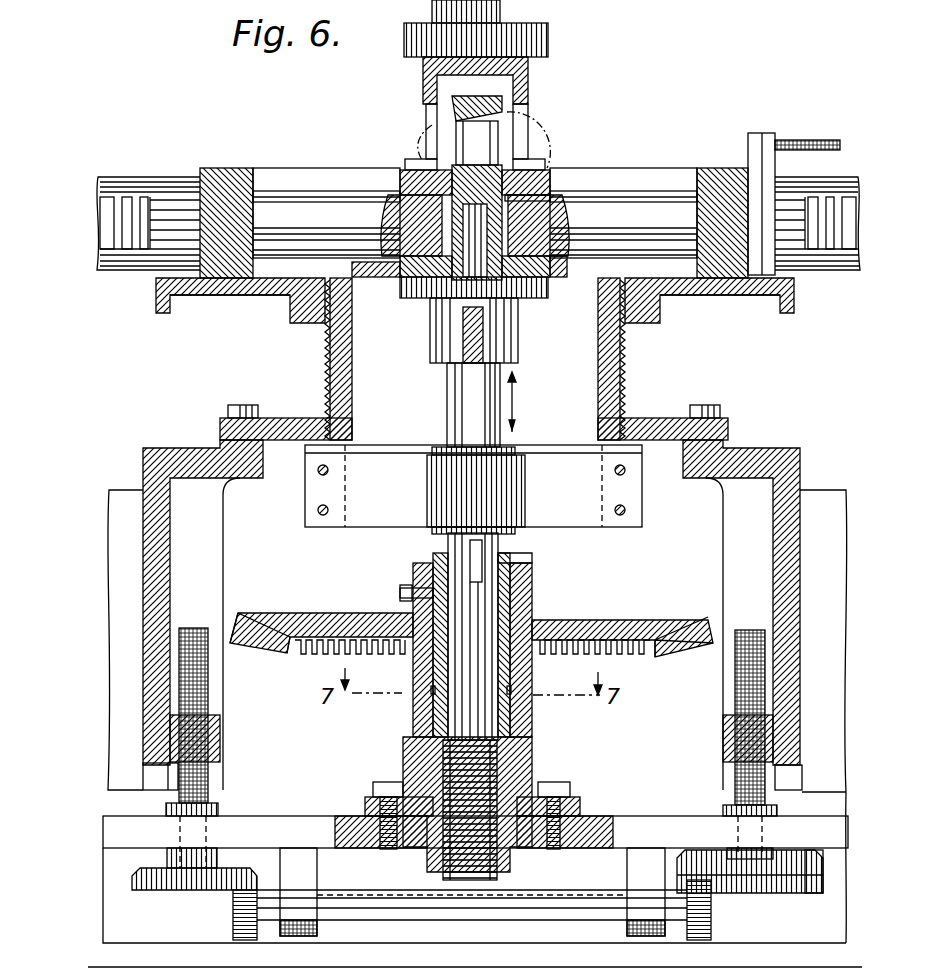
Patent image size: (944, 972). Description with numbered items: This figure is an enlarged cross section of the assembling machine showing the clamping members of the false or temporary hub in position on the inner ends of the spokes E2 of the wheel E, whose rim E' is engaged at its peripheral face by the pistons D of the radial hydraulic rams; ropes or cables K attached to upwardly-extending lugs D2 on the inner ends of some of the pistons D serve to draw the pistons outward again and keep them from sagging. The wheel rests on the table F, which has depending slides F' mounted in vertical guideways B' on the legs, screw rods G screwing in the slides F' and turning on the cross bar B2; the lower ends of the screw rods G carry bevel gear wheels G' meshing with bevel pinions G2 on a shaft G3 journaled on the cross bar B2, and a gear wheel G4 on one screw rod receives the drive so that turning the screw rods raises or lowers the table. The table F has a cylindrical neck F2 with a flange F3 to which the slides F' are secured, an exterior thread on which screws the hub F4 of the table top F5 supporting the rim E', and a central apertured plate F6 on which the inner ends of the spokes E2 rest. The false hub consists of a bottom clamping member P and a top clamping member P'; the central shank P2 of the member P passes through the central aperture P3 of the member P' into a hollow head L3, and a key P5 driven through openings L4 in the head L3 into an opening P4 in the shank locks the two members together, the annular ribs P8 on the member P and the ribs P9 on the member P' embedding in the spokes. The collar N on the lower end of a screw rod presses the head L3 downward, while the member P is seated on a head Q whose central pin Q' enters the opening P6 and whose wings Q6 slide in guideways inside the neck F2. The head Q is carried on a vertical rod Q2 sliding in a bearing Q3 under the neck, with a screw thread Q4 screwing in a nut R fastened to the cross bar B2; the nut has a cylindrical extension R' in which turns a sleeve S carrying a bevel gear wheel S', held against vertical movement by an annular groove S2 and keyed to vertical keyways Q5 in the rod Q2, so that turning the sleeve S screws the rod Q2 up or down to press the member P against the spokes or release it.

The collar N is at (537, 23).
The hollow head L3 is at (508, 82).
The opening P4 is at (462, 125).
The openings L4 is at (430, 140).
The key P5 is at (553, 122).
The top clamping member P' is at (546, 165).
The central aperture P3 is at (413, 193).
The bottom clamping member P is at (474, 244).
The central opening P6 is at (398, 212).
The central shank P2 is at (530, 220).
The annular ribs P9 is at (560, 193).
The annular ribs P8 is at (563, 280).
The wheel E is at (475, 198).
The spokes E2 is at (310, 205).
The rim E' is at (474, 207).
The pistons D is at (478, 206).
The bearing D' is at (475, 249).
The upwardly-extending lugs D2 is at (760, 133).
The ropes or cables K is at (800, 142).
The central pin Q' is at (474, 287).
The head Q is at (497, 329).
The wings Q6 is at (463, 340).
The central apertured plate F6 is at (387, 280).
The hub F4 is at (318, 322).
The table top F5 is at (212, 295).
The cylindrical neck F2 is at (352, 385).
The flange F3 is at (225, 420).
The table F is at (477, 650).
The depending slides F' is at (468, 634).
The vertical guideways B' is at (459, 763).
The bearing Q3 is at (433, 497).
The vertical rod Q2 is at (460, 400).
The vertical keyways Q5 is at (473, 548).
The cylindrical extension R' is at (436, 636).
The sleeve S is at (529, 645).
The annular groove S2 is at (515, 700).
The bevel gear wheel S' is at (471, 620).
The nut R is at (478, 804).
The screw thread Q4 is at (450, 882).
The cross bar B2 is at (293, 807).
The screw rods G is at (471, 748).
The shaft G3 is at (570, 888).
The bevel gear wheels G' is at (477, 887).
The bevel pinions G2 is at (233, 923).
The gear wheel G4 is at (823, 878).